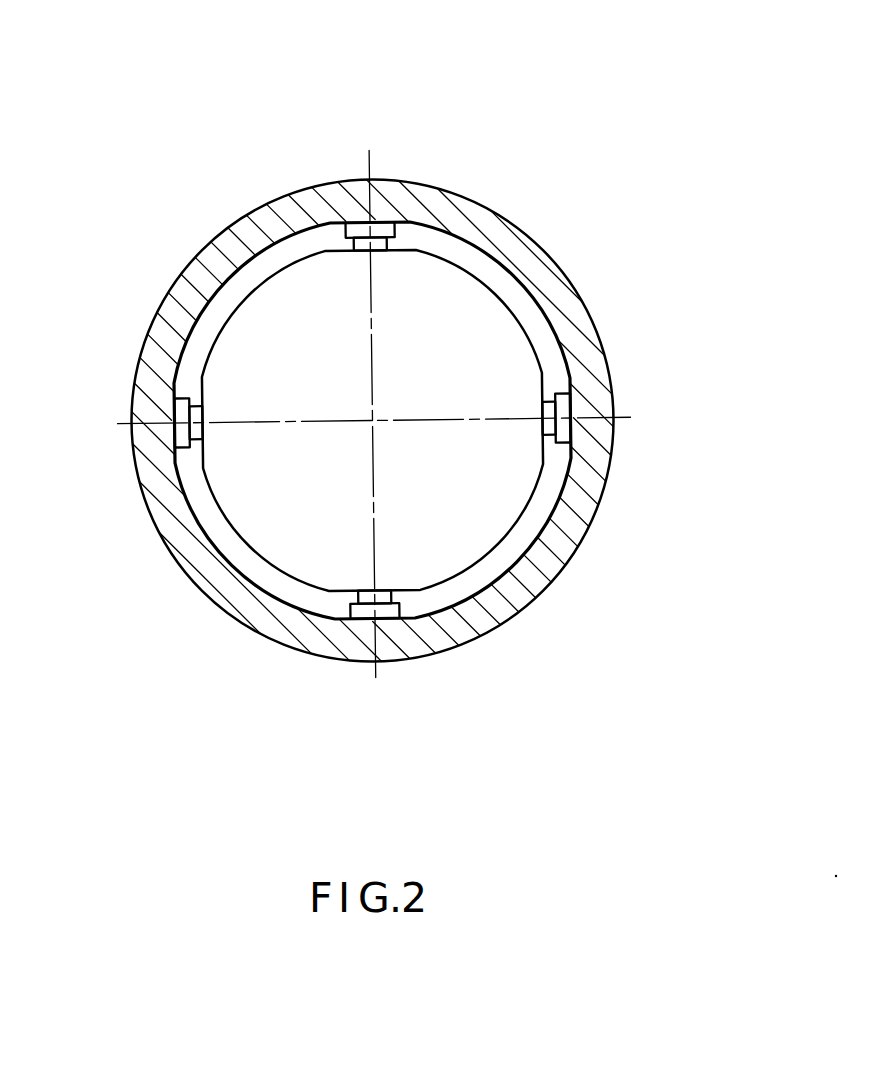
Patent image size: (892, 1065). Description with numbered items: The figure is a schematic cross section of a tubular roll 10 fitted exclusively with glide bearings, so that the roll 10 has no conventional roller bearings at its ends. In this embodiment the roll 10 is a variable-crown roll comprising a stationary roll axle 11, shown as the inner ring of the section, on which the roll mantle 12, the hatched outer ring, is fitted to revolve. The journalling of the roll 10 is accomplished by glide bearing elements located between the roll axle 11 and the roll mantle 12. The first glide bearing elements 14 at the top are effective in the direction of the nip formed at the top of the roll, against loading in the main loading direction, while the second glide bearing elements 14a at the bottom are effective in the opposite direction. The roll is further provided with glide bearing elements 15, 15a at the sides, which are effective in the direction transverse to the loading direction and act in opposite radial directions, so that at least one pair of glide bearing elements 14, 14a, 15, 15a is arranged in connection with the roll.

The roll 10 is at (523, 121).
The stationary roll axle 11 is at (490, 310).
The roll mantle 12 is at (240, 230).
The first glide bearing elements 14 is at (355, 223).
The second glide bearing elements 14a is at (383, 612).
The glide bearing element 15 is at (563, 407).
The glide bearing element 15a is at (173, 427).